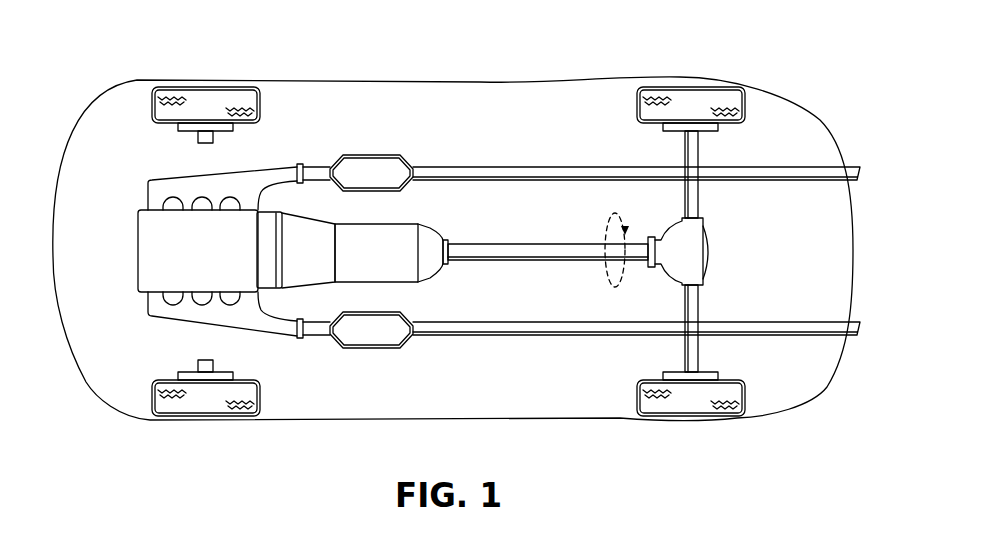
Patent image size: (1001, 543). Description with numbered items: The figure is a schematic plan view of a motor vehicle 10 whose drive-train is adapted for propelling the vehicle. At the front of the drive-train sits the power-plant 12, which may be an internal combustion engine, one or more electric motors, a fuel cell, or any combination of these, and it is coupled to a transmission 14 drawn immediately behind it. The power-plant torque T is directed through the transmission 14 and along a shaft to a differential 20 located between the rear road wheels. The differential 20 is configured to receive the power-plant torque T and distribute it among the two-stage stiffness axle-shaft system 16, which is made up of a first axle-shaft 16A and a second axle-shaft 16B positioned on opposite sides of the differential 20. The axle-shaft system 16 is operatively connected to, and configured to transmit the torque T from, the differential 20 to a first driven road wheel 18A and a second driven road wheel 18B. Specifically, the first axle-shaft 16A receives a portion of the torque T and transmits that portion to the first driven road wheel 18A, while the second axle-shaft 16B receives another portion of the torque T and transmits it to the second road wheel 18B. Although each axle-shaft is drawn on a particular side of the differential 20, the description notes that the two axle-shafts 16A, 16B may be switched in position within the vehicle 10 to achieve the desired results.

The motor vehicle 10 is at (524, 76).
The power-plant 12 is at (134, 270).
The transmission 14 is at (354, 293).
The two-stage stiffness axle-shaft system 16 is at (519, 265).
The first axle-shaft 16A is at (698, 315).
The second axle-shaft 16B is at (698, 206).
The first driven road wheel 18A is at (693, 402).
The second driven road wheel 18B is at (697, 97).
The differential 20 is at (689, 261).
The power-plant torque T is at (602, 233).